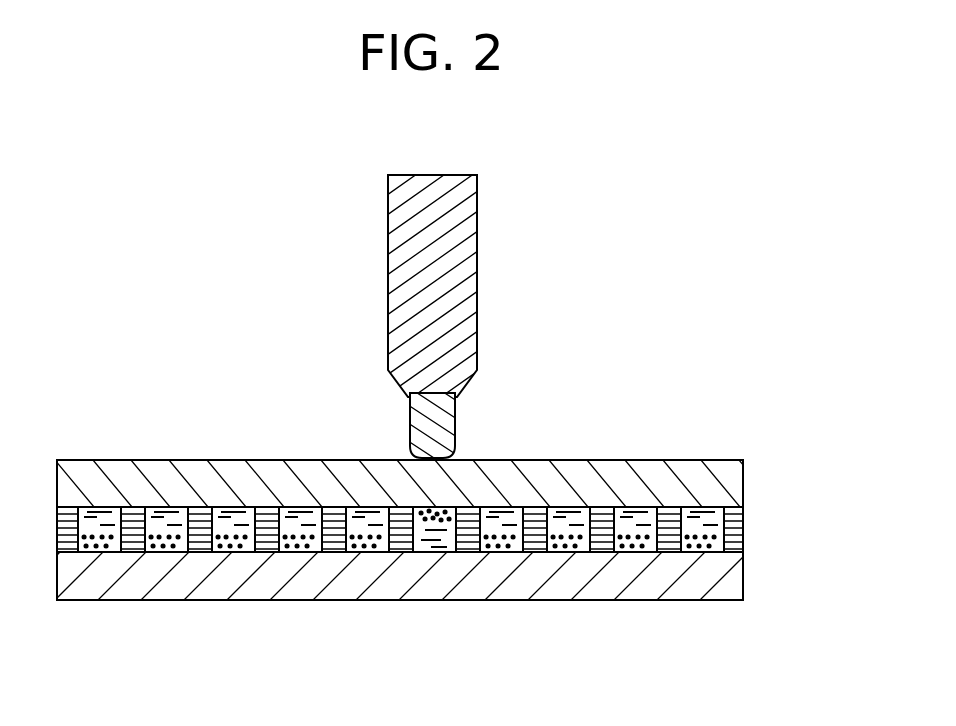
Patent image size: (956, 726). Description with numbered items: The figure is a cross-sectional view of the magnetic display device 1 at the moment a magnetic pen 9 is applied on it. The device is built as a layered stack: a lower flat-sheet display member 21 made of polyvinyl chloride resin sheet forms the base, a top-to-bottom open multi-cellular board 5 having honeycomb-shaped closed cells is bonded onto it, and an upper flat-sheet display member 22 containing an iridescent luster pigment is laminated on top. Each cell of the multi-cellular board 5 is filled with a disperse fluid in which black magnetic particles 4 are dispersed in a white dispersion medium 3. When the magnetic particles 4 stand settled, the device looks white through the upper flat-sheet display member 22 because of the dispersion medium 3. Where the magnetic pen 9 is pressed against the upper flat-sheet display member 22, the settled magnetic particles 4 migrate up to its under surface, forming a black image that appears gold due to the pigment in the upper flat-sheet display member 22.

The magnetic display device 1 is at (423, 502).
The dispersion medium 3 is at (490, 515).
The magnetic particles 4 is at (426, 520).
The multi-cellular board 5 is at (722, 522).
The magnetic pen 9 is at (457, 283).
The lower flat-sheet display member 21 is at (731, 568).
The upper flat-sheet display member 22 is at (737, 478).